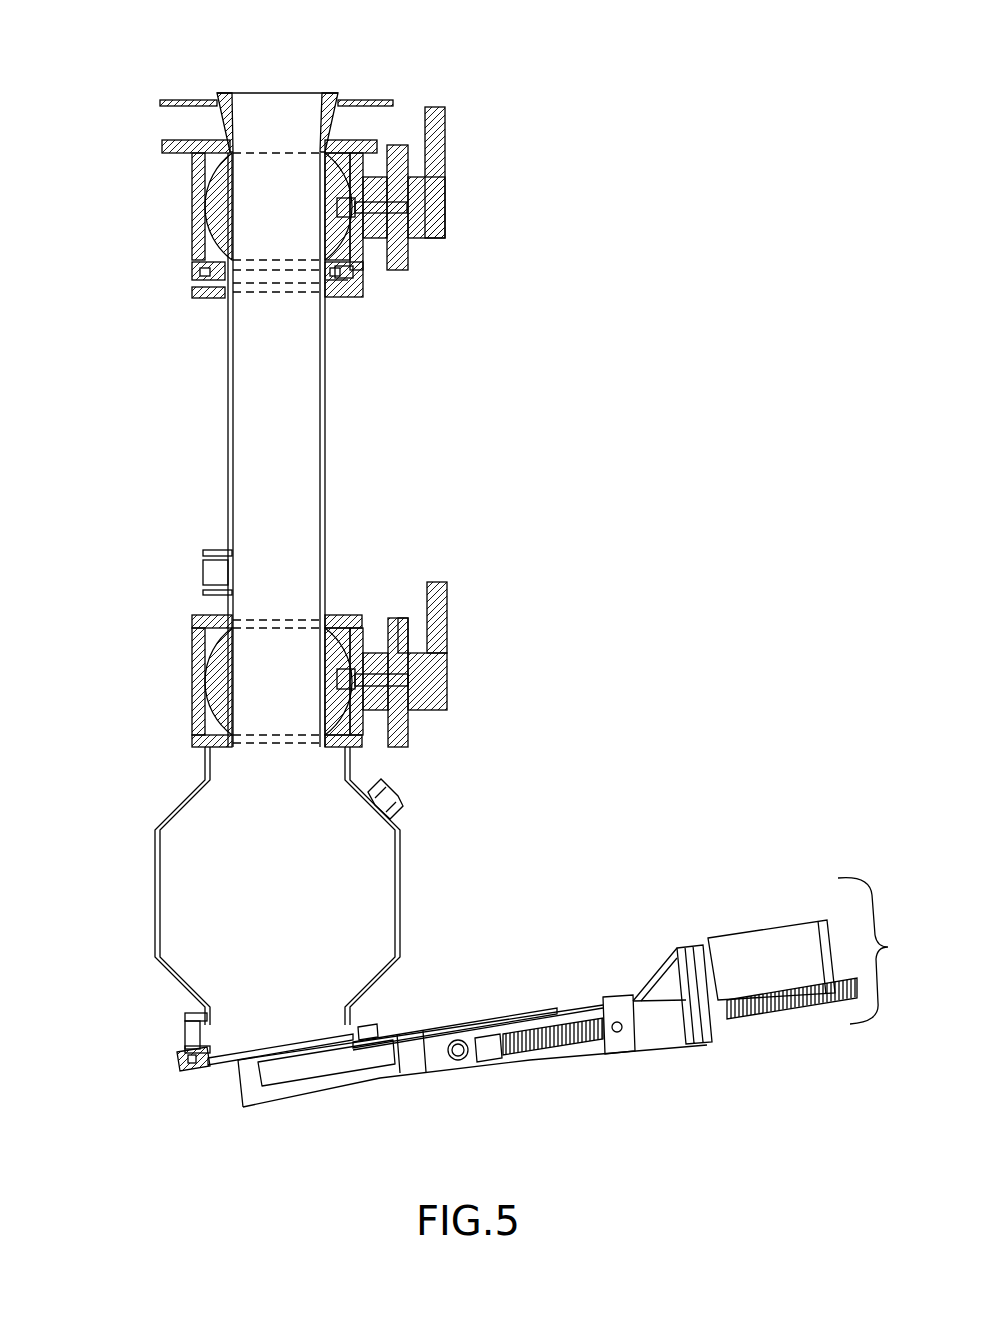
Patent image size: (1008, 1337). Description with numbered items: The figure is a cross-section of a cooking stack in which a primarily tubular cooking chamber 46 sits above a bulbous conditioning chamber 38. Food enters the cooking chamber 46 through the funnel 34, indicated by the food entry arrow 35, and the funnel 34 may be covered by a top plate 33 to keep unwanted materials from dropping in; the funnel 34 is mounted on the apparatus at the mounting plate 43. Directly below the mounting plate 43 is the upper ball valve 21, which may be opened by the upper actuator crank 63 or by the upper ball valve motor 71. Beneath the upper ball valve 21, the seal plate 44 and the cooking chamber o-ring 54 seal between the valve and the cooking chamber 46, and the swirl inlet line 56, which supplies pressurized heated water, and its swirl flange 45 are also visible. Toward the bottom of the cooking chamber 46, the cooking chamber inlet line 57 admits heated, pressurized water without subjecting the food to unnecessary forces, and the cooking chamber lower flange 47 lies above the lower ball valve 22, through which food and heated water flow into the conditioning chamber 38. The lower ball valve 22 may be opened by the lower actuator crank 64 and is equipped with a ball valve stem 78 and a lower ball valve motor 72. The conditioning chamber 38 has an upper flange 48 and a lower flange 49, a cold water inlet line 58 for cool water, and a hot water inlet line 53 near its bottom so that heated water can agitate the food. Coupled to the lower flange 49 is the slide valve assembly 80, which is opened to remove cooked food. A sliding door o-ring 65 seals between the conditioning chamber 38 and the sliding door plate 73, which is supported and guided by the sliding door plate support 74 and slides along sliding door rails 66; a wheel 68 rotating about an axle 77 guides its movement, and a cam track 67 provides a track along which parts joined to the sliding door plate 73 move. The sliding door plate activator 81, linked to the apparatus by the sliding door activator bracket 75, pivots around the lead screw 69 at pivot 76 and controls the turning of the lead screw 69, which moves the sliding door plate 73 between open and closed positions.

The upper ball valve 21 is at (193, 212).
The lower ball valve 22 is at (193, 688).
The top plate 33 is at (385, 98).
The funnel 34 is at (213, 104).
The inlet funnel 35 is at (288, 138).
The conditioning chamber 38 is at (400, 893).
The mounting plate 43 is at (172, 147).
The seal plate 44 is at (192, 271).
The swirl flange 45 is at (338, 292).
The cooking chamber 46 is at (228, 428).
The cooking chamber lower flange 47 is at (193, 621).
The upper flange 48 is at (193, 742).
The lower flange 49 is at (372, 1026).
The hot water inlet line 53 is at (186, 1021).
The cooking chamber o-ring 54 is at (355, 283).
The swirl inlet line 56 is at (193, 293).
The cooking chamber inlet line 57 is at (203, 572).
The cold water inlet line 58 is at (404, 797).
The upper actuator crank 63 is at (447, 128).
The lower actuator crank 64 is at (449, 690).
The sliding door o-ring 65 is at (188, 1063).
The sliding door rails 66 is at (248, 1110).
The cam track 67 is at (300, 1077).
The wheel 68 is at (480, 1050).
The lead screw 69 is at (825, 1000).
The upper ball valve motor 71 is at (405, 628).
The lower ball valve motor 72 is at (410, 252).
The sliding door plate 73 is at (535, 1012).
The sliding door plate support 74 is at (407, 1067).
The sliding door activator bracket 75 is at (658, 992).
The pivot 76 is at (620, 1032).
The axle 77 is at (461, 1058).
The ball valve stem 78 is at (385, 650).
The slide valve assembly 80 is at (877, 951).
The sliding door plate activator 81 is at (755, 935).